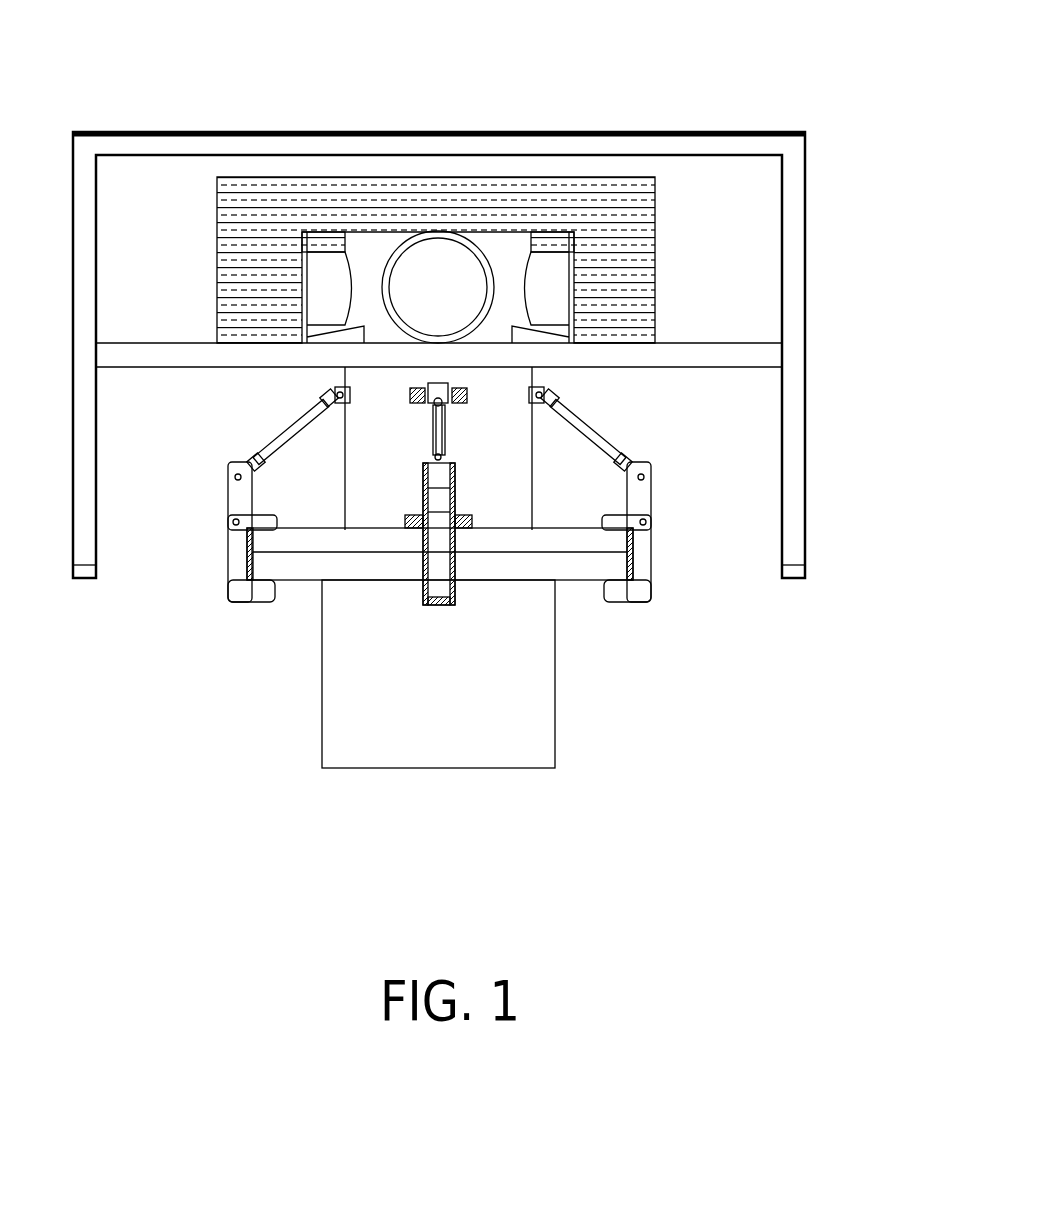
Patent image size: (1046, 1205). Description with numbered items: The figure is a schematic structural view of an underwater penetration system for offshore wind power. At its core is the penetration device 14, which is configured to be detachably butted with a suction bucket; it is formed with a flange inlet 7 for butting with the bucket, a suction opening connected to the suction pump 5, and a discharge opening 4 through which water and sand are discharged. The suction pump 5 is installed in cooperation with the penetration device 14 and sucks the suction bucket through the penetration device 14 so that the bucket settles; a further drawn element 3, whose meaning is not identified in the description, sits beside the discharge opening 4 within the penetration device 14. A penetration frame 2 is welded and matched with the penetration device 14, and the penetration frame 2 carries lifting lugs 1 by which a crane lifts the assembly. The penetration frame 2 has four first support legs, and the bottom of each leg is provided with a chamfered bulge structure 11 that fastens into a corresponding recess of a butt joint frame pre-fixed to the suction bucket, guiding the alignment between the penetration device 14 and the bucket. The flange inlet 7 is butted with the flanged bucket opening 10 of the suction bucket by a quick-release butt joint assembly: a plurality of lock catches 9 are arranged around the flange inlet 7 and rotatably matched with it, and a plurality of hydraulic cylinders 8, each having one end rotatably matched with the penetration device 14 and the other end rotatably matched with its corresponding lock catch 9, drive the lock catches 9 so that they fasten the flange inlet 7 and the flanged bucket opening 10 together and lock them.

The lifting lugs 1 is at (87, 125).
The penetration frame 2 is at (228, 140).
The lens holder 3 is at (303, 257).
The discharge opening 4 is at (465, 275).
The suction pump 5 is at (573, 217).
The flange inlet 7 is at (555, 533).
The hydraulic cylinders 8 is at (357, 522).
The lock catches 9 is at (379, 621).
The flanged bucket opening 10 is at (495, 562).
The bulge structure 11 is at (793, 578).
The penetration device 14 is at (390, 490).